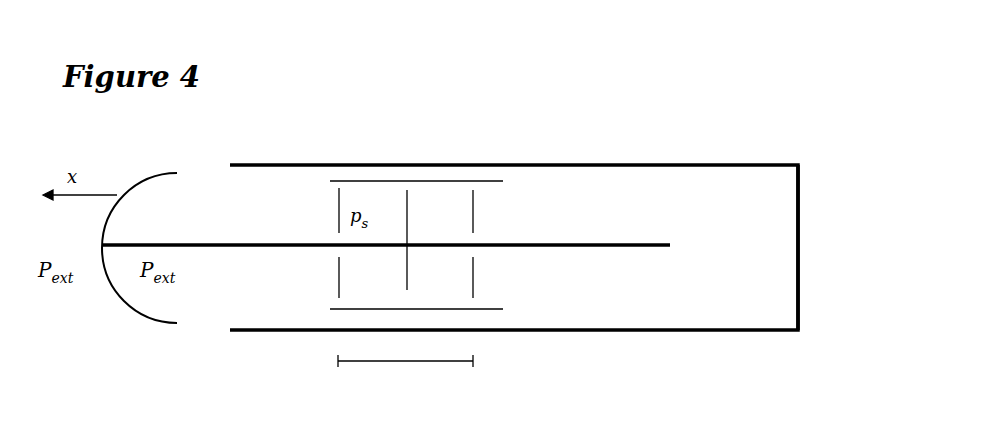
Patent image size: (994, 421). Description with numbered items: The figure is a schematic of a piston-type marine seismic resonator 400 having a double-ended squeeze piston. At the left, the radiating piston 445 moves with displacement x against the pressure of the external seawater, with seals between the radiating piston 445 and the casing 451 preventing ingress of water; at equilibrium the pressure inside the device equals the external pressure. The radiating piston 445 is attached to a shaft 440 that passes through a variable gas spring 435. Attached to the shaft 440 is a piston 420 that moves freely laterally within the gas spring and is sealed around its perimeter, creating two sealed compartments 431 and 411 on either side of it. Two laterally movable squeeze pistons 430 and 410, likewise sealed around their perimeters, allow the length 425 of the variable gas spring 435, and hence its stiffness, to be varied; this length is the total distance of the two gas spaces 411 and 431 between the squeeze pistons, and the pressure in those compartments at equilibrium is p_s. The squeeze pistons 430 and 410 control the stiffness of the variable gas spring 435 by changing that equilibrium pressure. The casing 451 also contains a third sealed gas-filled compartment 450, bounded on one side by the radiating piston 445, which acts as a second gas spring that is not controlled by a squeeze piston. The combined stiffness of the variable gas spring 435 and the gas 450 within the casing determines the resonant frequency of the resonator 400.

The piston-type marine seismic resonator 400 is at (590, 108).
The squeeze piston 410 is at (473, 190).
The sealed compartment 411 is at (453, 291).
The piston 420 is at (407, 190).
The length of the variable gas spring 425 is at (430, 368).
The squeeze piston 430 is at (339, 190).
The sealed compartment 431 is at (385, 291).
The variable gas spring 435 is at (397, 180).
The shaft 440 is at (655, 242).
The radiating piston 445 is at (163, 168).
The gas-filled compartment 450 is at (725, 287).
The casing 451 is at (770, 167).